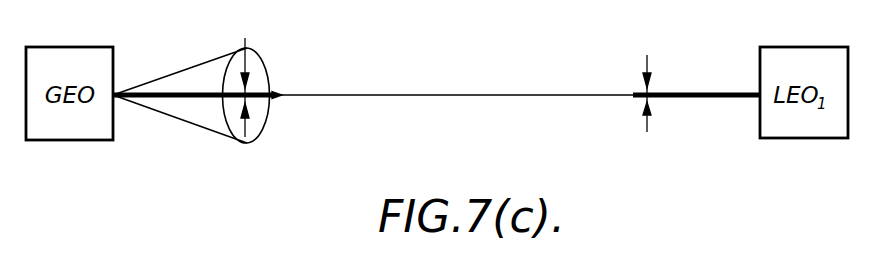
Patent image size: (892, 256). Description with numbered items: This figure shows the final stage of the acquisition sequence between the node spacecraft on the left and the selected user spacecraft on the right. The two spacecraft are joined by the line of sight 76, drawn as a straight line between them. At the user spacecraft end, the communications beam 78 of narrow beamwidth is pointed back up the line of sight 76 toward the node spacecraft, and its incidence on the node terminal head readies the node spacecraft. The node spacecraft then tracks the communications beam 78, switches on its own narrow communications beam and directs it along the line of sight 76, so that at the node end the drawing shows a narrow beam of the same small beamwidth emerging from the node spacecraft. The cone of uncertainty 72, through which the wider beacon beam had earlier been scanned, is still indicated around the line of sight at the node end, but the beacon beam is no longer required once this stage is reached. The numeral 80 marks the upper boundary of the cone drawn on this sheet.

The upper edge of beam cone 80 is at (167, 88).
The cone of uncertainty 72 is at (167, 113).
The line of sight 76 is at (440, 96).
The communications beam 78 is at (697, 90).